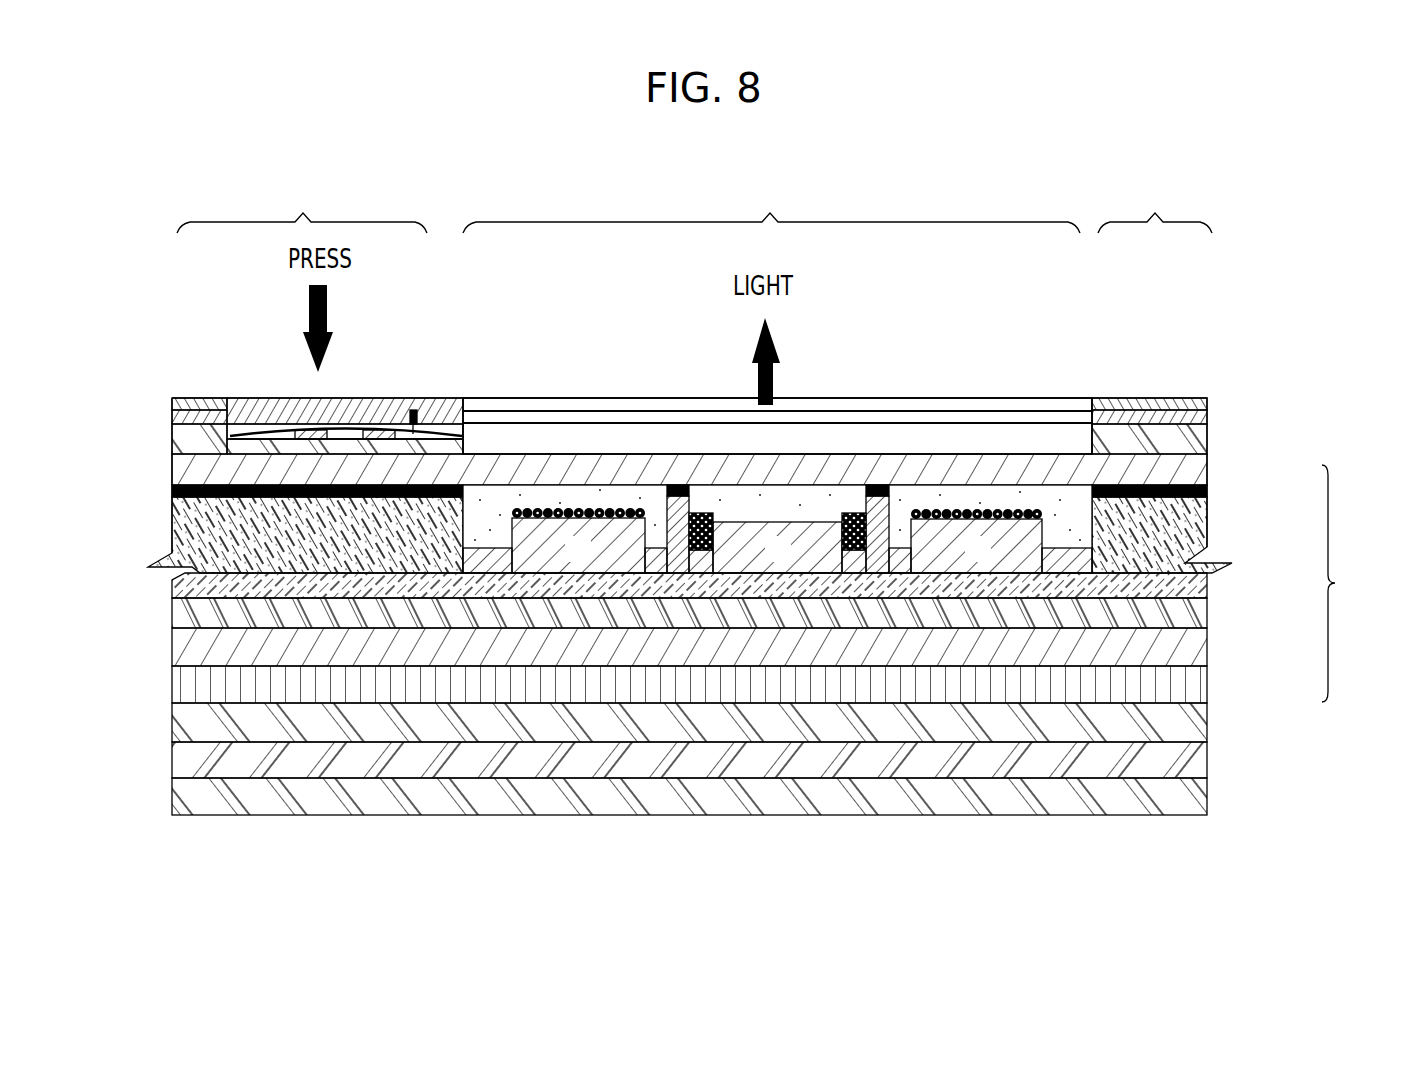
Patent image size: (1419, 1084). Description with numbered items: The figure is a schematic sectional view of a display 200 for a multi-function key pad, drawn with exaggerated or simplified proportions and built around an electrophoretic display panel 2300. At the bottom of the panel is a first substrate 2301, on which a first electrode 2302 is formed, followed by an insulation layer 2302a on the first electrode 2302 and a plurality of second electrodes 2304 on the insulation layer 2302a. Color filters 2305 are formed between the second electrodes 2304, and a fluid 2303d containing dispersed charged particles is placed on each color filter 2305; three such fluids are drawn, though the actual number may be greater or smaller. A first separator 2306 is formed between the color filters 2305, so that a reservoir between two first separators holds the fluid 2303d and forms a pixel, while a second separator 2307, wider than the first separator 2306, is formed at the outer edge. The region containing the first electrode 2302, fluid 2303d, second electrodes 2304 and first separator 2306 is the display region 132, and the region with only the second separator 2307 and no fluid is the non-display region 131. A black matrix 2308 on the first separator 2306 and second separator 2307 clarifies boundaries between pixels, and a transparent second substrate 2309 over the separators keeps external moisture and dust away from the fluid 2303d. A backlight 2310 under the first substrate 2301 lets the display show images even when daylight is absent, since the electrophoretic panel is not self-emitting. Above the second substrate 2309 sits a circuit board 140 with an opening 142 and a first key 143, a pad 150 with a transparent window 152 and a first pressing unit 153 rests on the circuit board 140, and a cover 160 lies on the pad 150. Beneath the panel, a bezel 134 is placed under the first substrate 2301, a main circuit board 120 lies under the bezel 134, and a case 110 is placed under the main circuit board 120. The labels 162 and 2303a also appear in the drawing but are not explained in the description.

The display for a multi-function key pad 200 is at (140, 336).
The case 110 is at (1200, 795).
The main circuit board 120 is at (1200, 760).
The non-display region 131 is at (694, 206).
The display region 132 is at (771, 206).
The bezel 134 is at (1200, 722).
The circuit board 140 is at (1202, 437).
The opening 142 is at (1058, 430).
The first key 143 is at (413, 410).
The pad 150 is at (1202, 415).
The transparent window 152 is at (1010, 417).
The first pressing unit 153 is at (453, 400).
The cover 160 is at (1201, 398).
The cover layer display portion 162 is at (963, 404).
The electrophoretic display panel 2300 is at (780, 578).
The first substrate 2301 is at (1203, 647).
The first electrode 2302 is at (1200, 613).
The insulation layer 2302a is at (1197, 585).
The pixel electrode 2303a is at (615, 508).
The fluid 2303d is at (543, 494).
The second electrode 2304 is at (1075, 558).
The color filter 2305 is at (737, 522).
The first separator 2306 is at (851, 510).
The second separator 2307 is at (172, 534).
The black matrix 2308 is at (880, 490).
The second substrate 2309 is at (1202, 478).
The backlight 2310 is at (1200, 685).